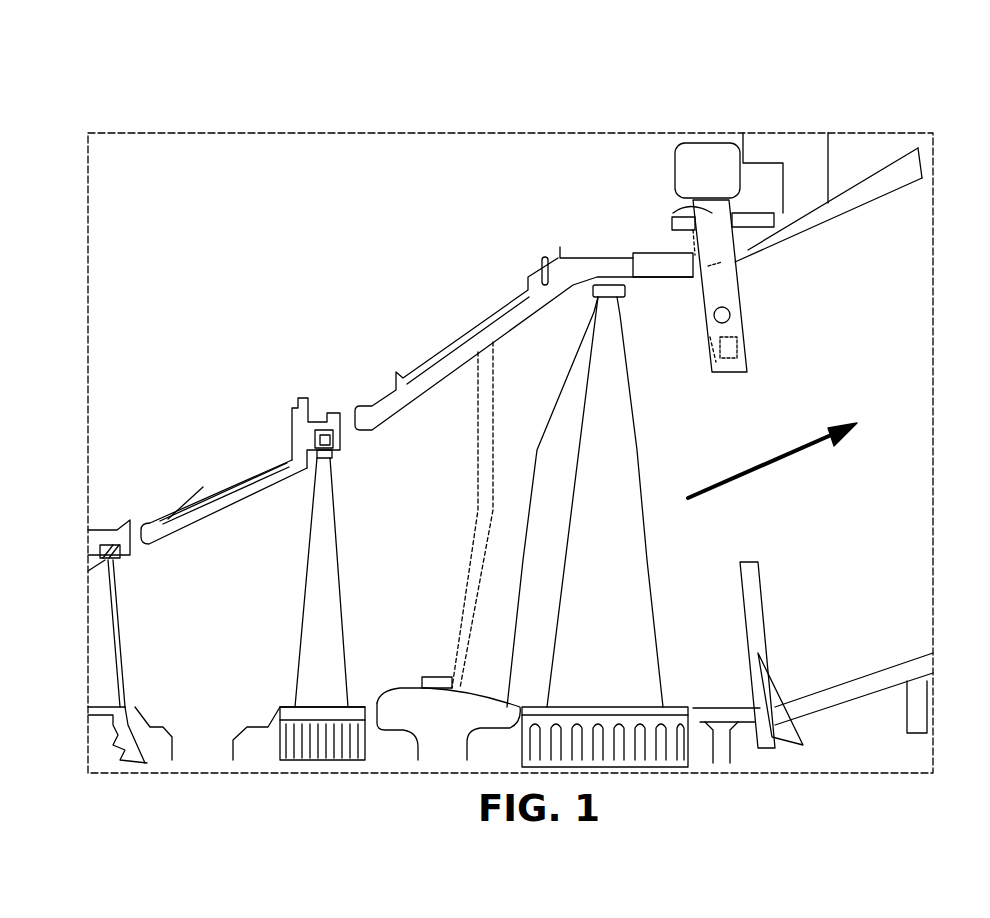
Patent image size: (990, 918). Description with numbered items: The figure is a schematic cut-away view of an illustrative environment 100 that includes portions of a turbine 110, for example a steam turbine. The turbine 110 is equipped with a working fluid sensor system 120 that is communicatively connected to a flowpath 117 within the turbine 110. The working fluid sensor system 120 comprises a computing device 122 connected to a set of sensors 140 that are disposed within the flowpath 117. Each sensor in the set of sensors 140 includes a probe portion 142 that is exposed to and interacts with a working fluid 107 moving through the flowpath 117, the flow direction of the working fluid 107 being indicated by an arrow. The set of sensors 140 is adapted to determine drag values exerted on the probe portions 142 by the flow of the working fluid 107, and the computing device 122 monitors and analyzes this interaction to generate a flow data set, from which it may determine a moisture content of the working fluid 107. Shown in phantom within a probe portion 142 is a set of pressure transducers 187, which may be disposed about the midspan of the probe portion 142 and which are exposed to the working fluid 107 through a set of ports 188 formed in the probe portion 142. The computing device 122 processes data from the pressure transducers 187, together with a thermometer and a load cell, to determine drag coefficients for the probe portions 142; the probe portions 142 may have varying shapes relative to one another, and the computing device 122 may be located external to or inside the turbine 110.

The environment 100 is at (739, 126).
The turbine 110 is at (148, 186).
The flowpath 117 is at (845, 293).
The working fluid sensor system 120 is at (608, 241).
The computing device 122 is at (725, 177).
The set of sensors 140 is at (720, 298).
The probe portion 142 is at (703, 305).
The set of pressure transducers 187 is at (750, 347).
The set of ports 188 is at (706, 337).
The working fluid 107 is at (772, 460).